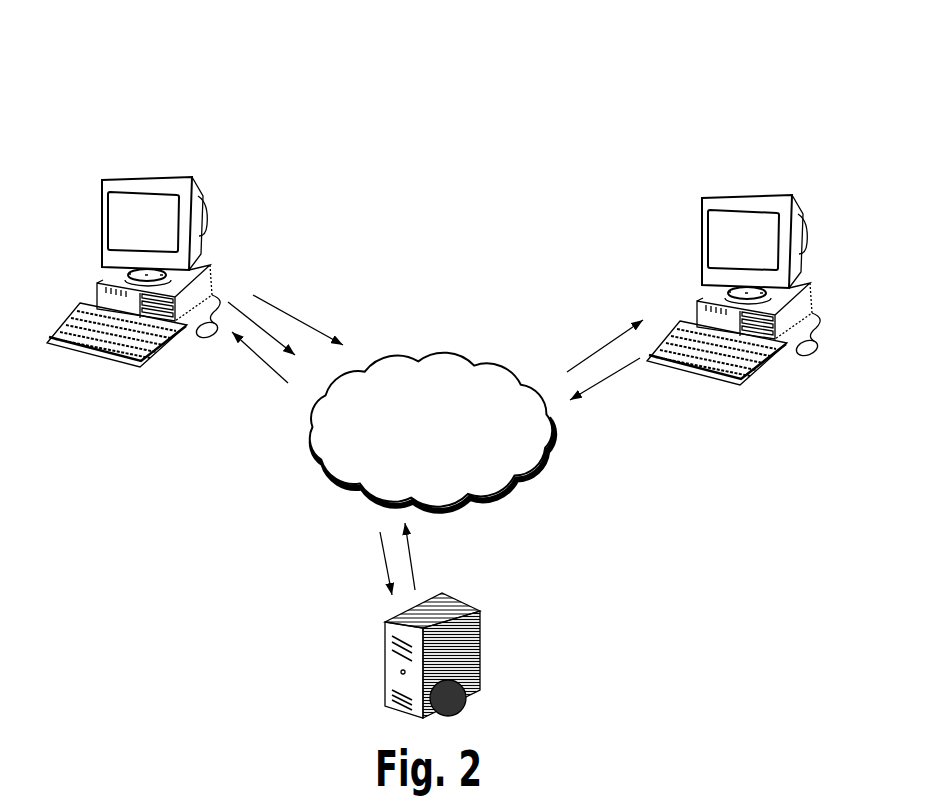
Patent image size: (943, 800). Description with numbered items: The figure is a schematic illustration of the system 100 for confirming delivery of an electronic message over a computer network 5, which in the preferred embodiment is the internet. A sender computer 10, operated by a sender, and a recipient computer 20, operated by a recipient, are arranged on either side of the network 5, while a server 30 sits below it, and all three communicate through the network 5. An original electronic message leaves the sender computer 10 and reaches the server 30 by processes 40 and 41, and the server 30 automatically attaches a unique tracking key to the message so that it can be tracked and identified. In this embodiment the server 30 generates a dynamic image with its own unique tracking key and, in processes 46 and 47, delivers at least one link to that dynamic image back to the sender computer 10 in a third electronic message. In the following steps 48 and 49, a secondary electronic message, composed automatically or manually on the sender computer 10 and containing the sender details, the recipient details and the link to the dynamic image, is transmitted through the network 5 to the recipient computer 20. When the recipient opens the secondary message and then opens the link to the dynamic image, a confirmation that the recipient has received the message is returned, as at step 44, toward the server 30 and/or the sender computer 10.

The system 100 is at (403, 128).
The sender computer 10 is at (178, 176).
The recipient computer 20 is at (732, 194).
The network 5 is at (458, 352).
The server 30 is at (485, 658).
The process 40 is at (230, 304).
The process 47 is at (272, 372).
The step 48 is at (310, 312).
The step 49 is at (588, 350).
The step 44 is at (605, 388).
The process 41 is at (377, 548).
The process 46 is at (417, 561).